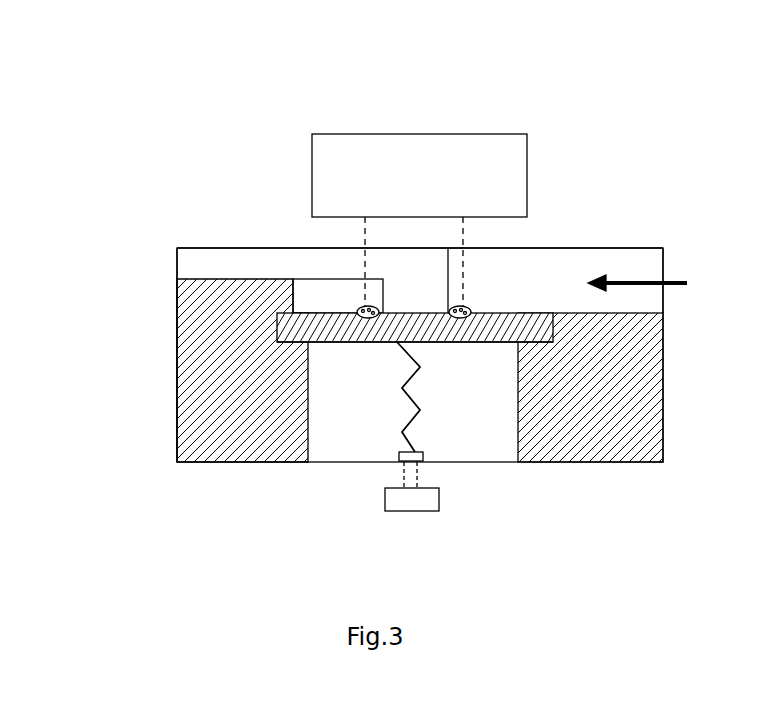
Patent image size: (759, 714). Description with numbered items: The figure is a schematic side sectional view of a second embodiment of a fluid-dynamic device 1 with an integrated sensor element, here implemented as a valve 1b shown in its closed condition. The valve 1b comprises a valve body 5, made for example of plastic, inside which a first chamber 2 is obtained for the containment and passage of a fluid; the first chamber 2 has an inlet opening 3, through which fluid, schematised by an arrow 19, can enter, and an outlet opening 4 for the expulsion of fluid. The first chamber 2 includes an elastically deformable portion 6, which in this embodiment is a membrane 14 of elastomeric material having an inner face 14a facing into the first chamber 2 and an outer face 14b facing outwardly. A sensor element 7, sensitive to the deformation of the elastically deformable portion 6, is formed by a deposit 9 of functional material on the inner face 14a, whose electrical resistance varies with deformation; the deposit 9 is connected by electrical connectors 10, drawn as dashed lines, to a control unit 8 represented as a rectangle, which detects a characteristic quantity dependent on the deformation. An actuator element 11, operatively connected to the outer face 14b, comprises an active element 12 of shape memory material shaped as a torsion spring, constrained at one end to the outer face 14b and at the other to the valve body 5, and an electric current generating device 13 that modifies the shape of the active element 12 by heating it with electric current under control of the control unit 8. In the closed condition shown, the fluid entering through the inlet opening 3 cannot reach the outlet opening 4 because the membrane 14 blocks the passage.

The fluid-dynamic device 1 is at (645, 482).
The valve 1b is at (177, 342).
The first chamber 2 is at (327, 272).
The inlet opening 3 is at (663, 267).
The outlet opening 4 is at (177, 263).
The valve body 5 is at (200, 377).
The elastically deformable portion 6 is at (380, 343).
The sensor element 7 is at (353, 330).
The control unit 8 is at (378, 170).
The deposit of functional material 9 is at (355, 308).
The electrical connectors 10 is at (362, 243).
The actuator element 11 is at (442, 519).
The active element 12 is at (418, 415).
The electric current generating device 13 is at (395, 502).
The membrane 14 is at (445, 362).
The inner face 14a is at (305, 305).
The outer face 14b is at (461, 347).
The arrow 19 is at (622, 287).